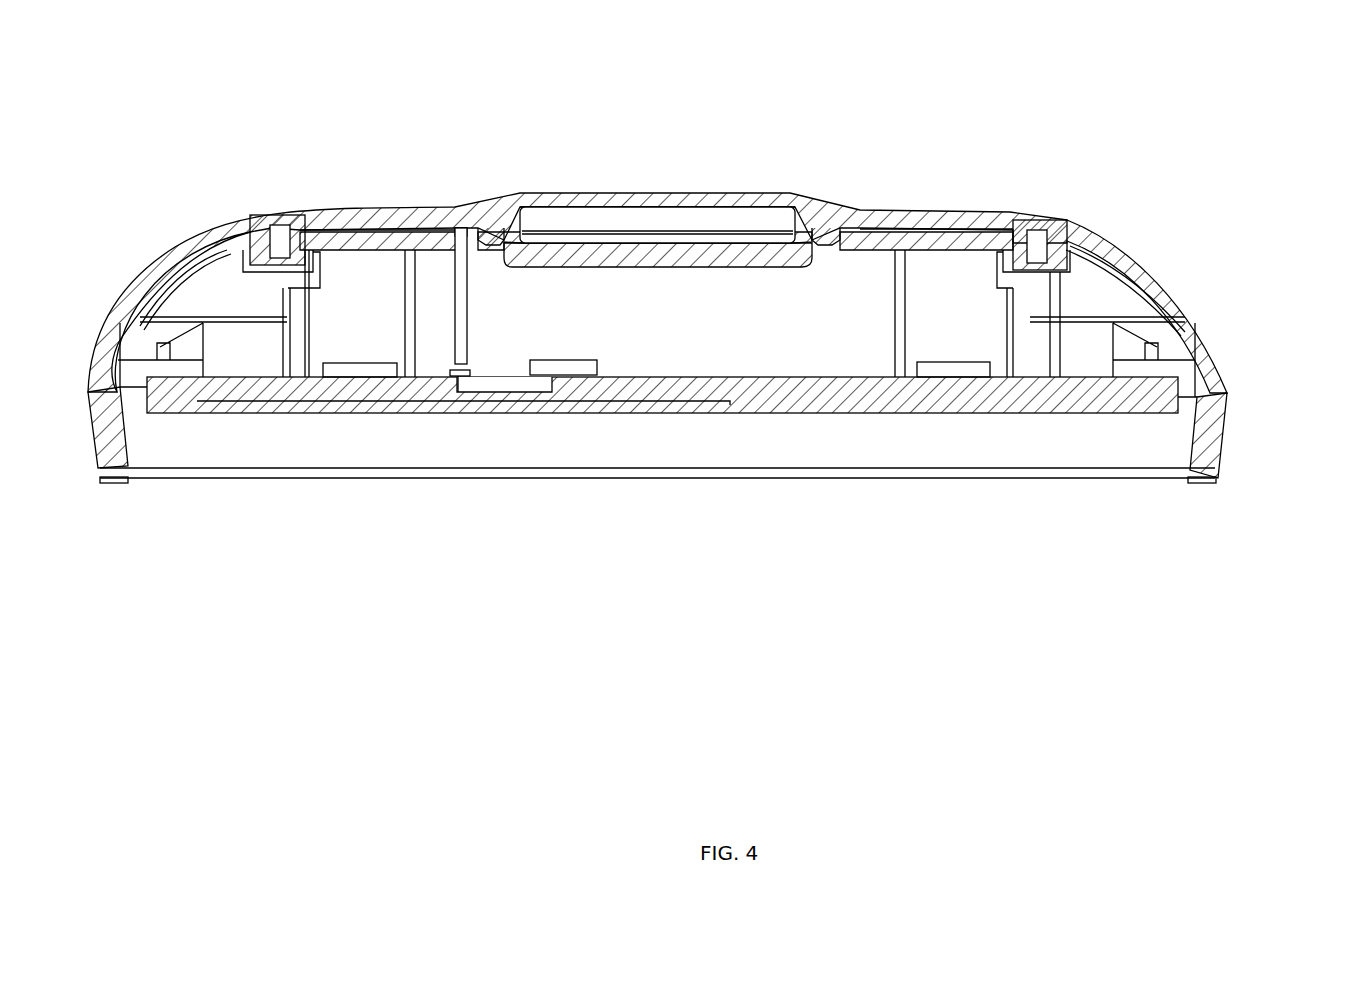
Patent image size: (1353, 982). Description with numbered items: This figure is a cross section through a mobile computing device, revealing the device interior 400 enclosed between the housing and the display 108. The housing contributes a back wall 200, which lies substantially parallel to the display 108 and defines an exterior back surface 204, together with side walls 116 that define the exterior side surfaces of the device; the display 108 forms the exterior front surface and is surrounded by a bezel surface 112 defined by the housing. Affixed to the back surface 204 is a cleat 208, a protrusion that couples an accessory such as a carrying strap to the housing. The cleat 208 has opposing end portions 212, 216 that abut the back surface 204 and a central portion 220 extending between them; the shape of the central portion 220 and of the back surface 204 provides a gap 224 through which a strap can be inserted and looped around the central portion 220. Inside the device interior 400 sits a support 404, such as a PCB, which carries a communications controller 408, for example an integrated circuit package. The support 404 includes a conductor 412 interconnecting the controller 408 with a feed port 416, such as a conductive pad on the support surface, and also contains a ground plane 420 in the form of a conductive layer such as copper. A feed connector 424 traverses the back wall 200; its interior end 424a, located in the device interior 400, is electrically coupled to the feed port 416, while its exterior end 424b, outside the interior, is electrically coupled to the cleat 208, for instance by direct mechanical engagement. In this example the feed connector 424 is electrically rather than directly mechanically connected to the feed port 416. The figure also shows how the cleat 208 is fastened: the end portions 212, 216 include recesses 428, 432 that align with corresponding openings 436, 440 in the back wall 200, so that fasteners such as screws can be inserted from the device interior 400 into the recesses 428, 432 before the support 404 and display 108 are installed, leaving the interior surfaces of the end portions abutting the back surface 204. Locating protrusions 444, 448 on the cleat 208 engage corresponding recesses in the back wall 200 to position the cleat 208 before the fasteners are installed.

The display 108 is at (690, 480).
The bezel surface 112 is at (120, 484).
The side walls 116 is at (93, 335).
The back wall 200 is at (1123, 240).
The exterior back surface 204 is at (210, 230).
The cleat 208 is at (652, 191).
The end portion 212 is at (920, 213).
The end portion 216 is at (338, 215).
The central portion 220 is at (737, 190).
The gap 224 is at (582, 218).
The device interior 400 is at (834, 334).
The support 404 is at (423, 413).
The communications controller 408 is at (597, 367).
The conductor 412 is at (503, 393).
The feed port 416 is at (457, 380).
The ground plane 420 is at (720, 404).
The feed connector 424 is at (470, 303).
The interior end 424a is at (468, 362).
The exterior end 424b is at (458, 228).
The recess 428 is at (280, 237).
The recess 432 is at (1037, 235).
The opening 436 is at (255, 265).
The opening 440 is at (1063, 283).
The locating protrusion 444 is at (495, 237).
The locating protrusion 448 is at (817, 232).